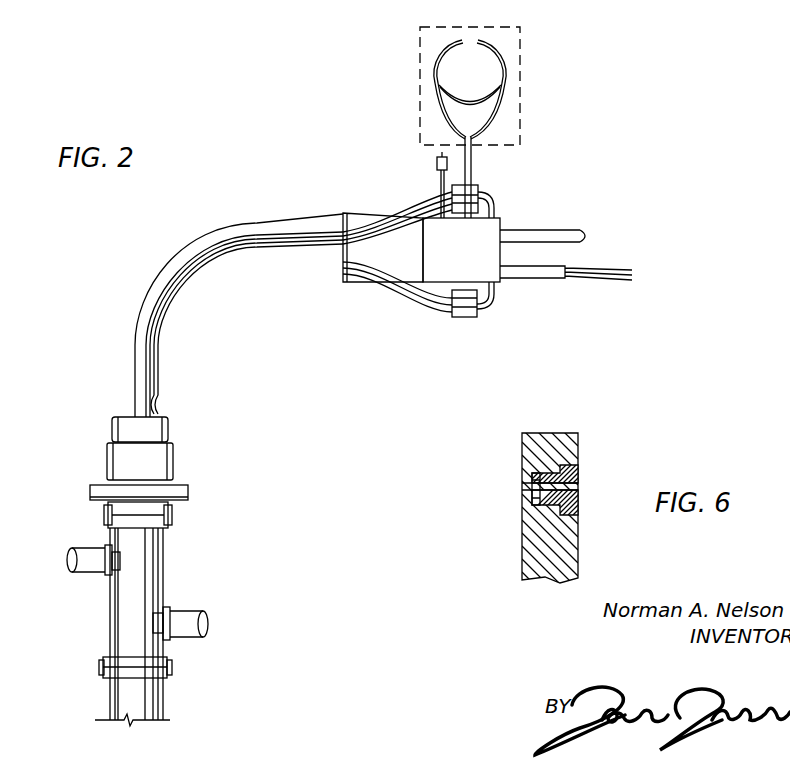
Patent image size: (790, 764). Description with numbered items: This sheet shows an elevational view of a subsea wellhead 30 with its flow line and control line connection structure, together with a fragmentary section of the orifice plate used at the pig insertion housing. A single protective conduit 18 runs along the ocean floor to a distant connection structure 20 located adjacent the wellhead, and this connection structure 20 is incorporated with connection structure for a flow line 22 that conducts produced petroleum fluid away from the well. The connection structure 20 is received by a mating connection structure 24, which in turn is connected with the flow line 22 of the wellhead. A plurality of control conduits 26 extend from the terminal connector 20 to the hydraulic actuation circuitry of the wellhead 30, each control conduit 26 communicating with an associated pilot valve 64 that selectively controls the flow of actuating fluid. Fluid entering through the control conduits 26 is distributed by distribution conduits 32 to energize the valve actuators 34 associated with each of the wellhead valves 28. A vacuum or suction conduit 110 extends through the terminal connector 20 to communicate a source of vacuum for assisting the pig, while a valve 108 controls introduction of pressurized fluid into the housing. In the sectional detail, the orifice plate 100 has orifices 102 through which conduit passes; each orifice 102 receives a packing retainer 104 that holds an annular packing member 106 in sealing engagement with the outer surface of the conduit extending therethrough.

In FIG. 2, the protective conduit 18 is at (550, 281).
In FIG. 2, the connection structure 20 is at (490, 232).
In FIG. 2, the flow line 22 is at (223, 238).
In FIG. 2, the mating connection structure 24 is at (352, 285).
In FIG. 2, the control conduits 26 is at (318, 250).
In FIG. 2, the wellhead valves 28 is at (108, 577).
In FIG. 2, the wellhead 30 is at (140, 708).
In FIG. 2, the distribution conduits 32 is at (165, 567).
In FIG. 2, the valve actuators 34 is at (72, 550).
In FIG. 2, the pilot valve 64 is at (478, 205).
In FIG. 6, the orifice plate 100 is at (562, 437).
In FIG. 6, the orifices 102 is at (522, 486).
In FIG. 6, the packing retainer 104 is at (580, 478).
In FIG. 6, the annular packing member 106 is at (530, 490).
In FIG. 2, the valve 108 is at (437, 186).
In FIG. 2, the vacuum or suction conduit 110 is at (437, 163).